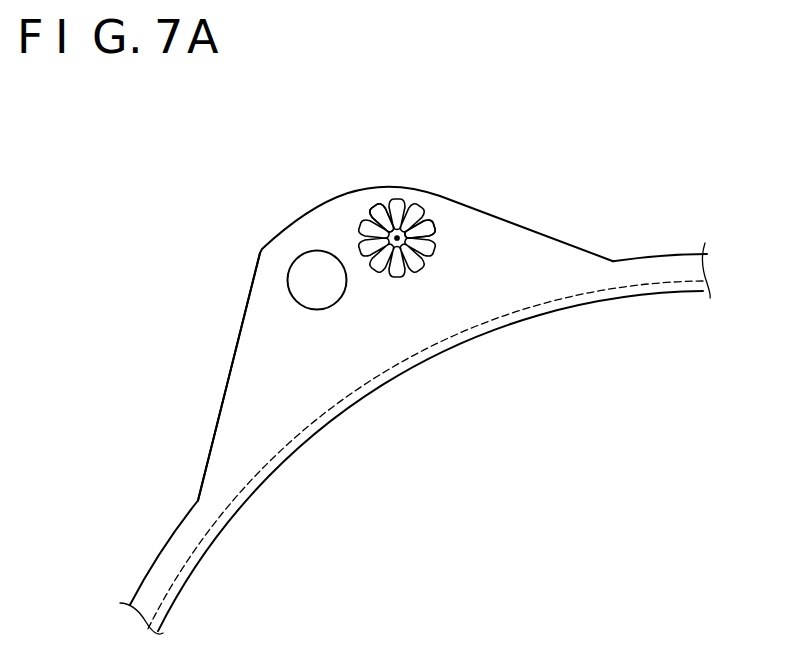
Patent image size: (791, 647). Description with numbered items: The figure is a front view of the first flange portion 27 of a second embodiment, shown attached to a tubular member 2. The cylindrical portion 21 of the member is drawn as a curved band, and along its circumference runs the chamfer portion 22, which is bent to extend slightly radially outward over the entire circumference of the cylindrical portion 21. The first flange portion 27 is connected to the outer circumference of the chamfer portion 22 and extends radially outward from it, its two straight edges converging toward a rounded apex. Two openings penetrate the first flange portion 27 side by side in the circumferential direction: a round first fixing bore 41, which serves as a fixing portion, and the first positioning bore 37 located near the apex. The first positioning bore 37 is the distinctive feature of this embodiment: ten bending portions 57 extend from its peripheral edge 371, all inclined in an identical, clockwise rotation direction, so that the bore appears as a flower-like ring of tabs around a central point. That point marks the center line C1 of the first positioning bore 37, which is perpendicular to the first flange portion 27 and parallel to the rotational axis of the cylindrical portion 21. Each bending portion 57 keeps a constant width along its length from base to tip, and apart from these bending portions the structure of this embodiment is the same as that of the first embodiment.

The tubular member 2 is at (593, 230).
The chamfer portion 22 is at (672, 262).
The cylindrical portion 21 is at (648, 292).
The first flange portion 27 is at (258, 358).
The first fixing bore 41 is at (307, 280).
The first positioning bore 37 is at (387, 203).
The peripheral edge 371 is at (364, 213).
The center line C1 is at (398, 233).
The bending portions 57 is at (418, 233).